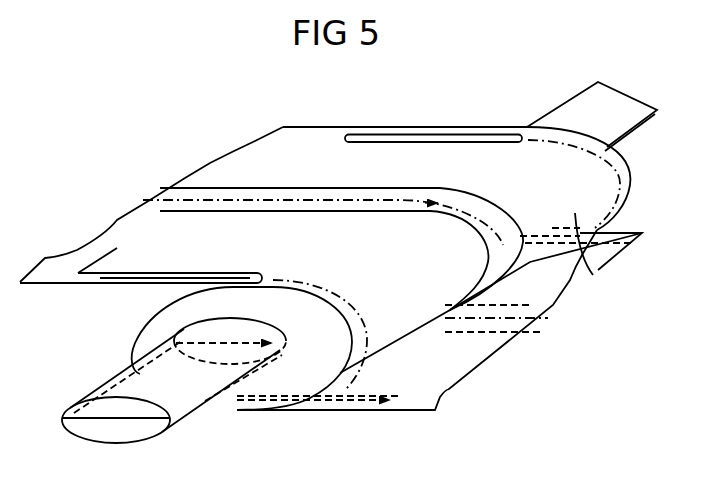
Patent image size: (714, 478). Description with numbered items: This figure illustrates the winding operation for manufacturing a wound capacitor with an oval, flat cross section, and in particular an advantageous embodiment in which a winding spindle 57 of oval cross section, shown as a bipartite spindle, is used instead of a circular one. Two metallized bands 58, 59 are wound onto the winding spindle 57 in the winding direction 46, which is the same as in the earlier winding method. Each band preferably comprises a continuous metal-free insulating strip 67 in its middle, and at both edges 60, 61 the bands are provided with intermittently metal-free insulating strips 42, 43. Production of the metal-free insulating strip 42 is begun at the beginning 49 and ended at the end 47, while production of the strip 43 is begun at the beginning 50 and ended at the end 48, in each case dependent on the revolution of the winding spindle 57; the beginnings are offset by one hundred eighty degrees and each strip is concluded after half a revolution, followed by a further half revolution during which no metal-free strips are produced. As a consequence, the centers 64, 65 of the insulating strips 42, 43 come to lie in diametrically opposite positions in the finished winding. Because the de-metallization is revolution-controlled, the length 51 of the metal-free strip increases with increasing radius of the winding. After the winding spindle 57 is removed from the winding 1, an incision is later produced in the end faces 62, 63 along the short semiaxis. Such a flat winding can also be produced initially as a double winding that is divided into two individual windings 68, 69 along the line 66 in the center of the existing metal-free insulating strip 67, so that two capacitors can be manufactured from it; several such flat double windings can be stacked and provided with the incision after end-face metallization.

The winding 1 is at (122, 334).
The metal-free insulating strip 42 is at (470, 135).
The metal-free insulating strip 43 is at (622, 248).
The winding direction 46 is at (388, 167).
The end of insulating strip 47 is at (55, 259).
The end of insulating strip 48 is at (407, 408).
The beginning of insulating strip 49 is at (262, 281).
The beginning of insulating strip 50 is at (243, 400).
The length of metal-free insulating strip 51 is at (283, 251).
The winding spindle 57 is at (588, 100).
The metallized band 58 is at (268, 157).
The metallized band 59 is at (440, 393).
The band edge 60 is at (323, 127).
The band edge 61 is at (608, 228).
The end face 62 is at (296, 405).
The end face 63 is at (597, 177).
The center of metal-free strip 64 is at (432, 134).
The center of metal-free strip 65 is at (600, 262).
The dividing line 66 is at (310, 198).
The metal-free insulating strip 67 is at (376, 198).
The individual winding 68 is at (390, 330).
The individual winding 69 is at (592, 274).